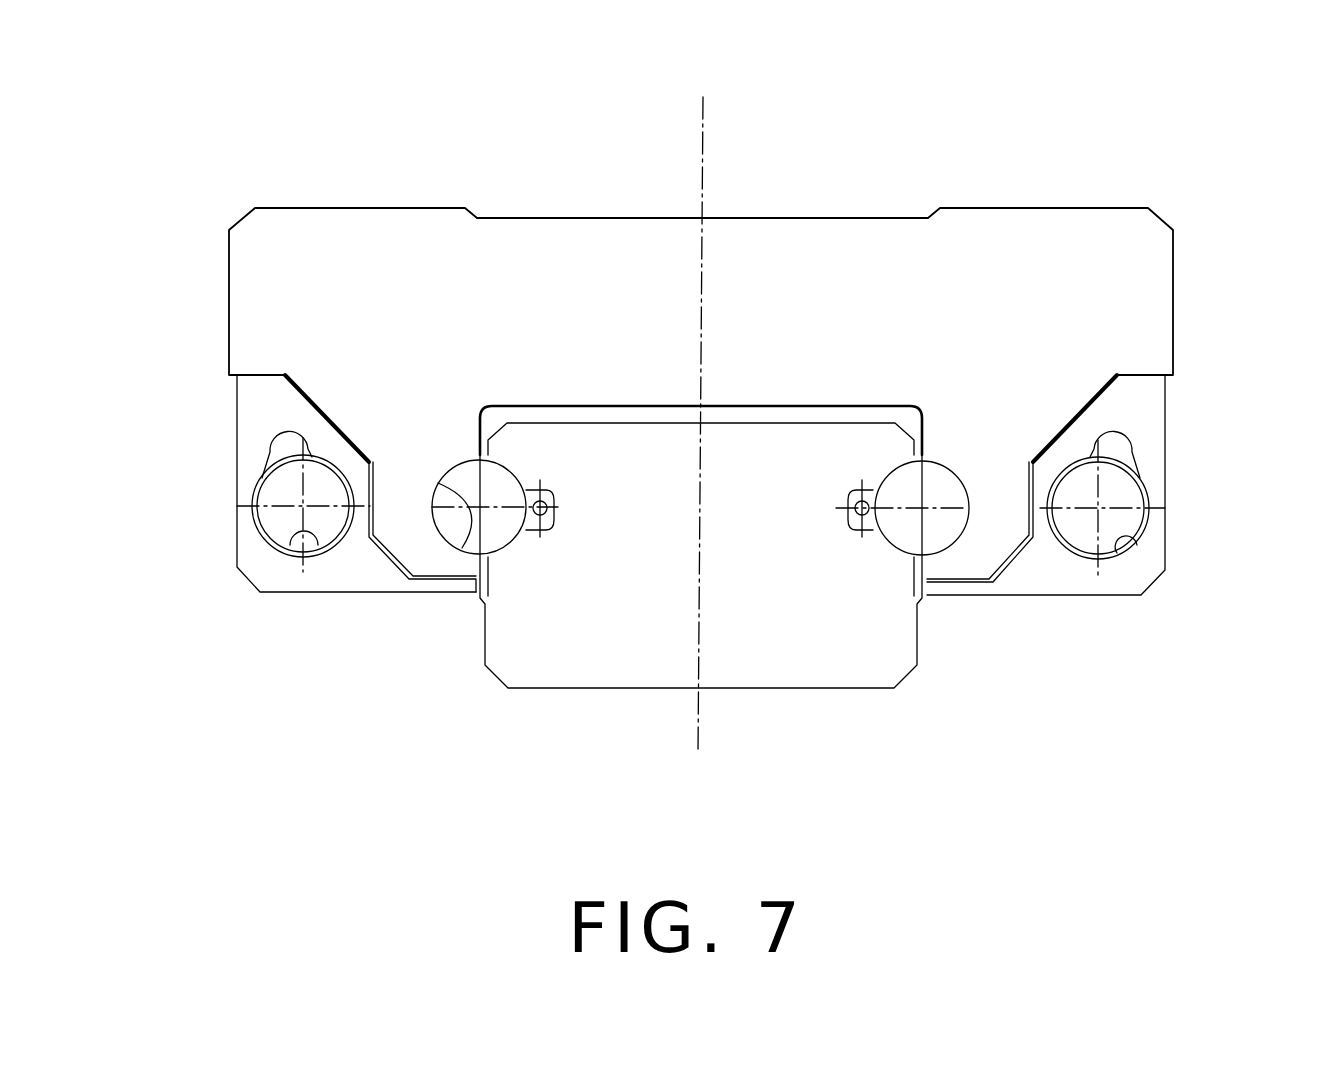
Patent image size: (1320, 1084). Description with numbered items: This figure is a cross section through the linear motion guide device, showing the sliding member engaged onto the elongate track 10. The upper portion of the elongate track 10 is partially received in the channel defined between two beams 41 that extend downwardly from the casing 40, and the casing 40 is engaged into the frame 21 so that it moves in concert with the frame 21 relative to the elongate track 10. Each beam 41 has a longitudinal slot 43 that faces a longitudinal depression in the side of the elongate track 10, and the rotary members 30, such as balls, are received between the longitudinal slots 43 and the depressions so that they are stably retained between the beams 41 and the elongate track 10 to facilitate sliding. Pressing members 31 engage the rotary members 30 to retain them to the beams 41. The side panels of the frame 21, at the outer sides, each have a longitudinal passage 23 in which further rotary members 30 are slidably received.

The elongate track 10 is at (657, 673).
The frame 21 is at (248, 560).
The longitudinal passage 23 is at (292, 542).
The rotary members 30 is at (280, 490).
The pressing members 31 is at (545, 523).
The casing 40 is at (828, 263).
The beams 41 is at (388, 497).
The longitudinal slot 43 is at (472, 550).